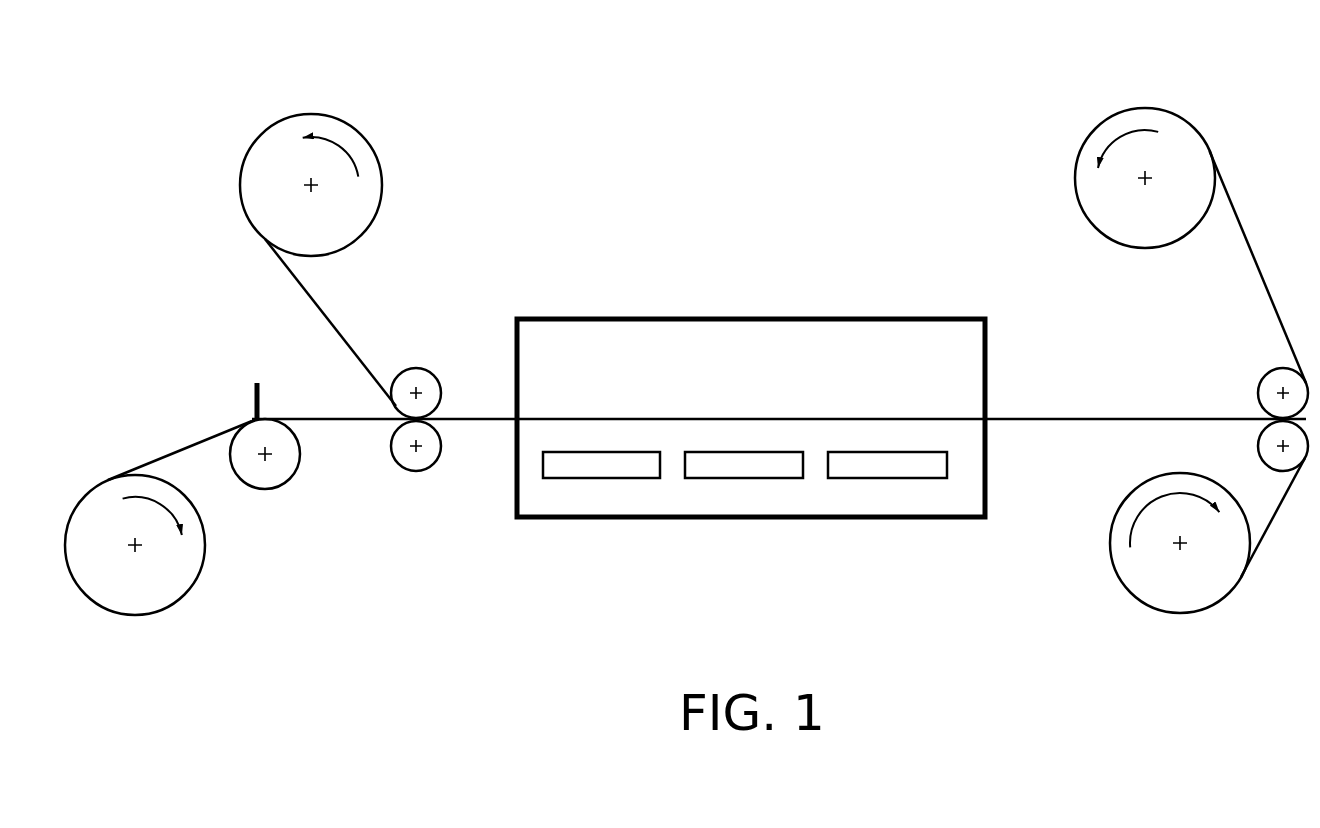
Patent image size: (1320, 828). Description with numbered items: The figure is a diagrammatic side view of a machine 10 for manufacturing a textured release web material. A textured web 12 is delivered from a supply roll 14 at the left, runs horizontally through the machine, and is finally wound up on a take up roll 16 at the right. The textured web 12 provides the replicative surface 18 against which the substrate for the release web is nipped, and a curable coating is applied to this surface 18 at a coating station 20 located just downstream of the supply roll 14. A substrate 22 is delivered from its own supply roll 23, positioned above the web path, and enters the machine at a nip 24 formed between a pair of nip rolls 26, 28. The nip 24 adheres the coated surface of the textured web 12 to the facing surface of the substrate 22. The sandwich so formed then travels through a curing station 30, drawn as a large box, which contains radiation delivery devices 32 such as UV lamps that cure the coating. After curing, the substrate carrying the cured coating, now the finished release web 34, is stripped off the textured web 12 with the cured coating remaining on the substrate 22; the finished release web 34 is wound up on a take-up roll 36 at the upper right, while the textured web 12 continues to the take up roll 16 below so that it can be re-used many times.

The machine 10 is at (722, 127).
The textured web 12 is at (181, 432).
The supply roll 14 is at (146, 636).
The take up roll 16 is at (1159, 625).
The replicative surface 18 is at (352, 418).
The coating station 20 is at (232, 412).
The substrate 22 is at (345, 338).
The supply roll 23 is at (289, 94).
The nip 24 is at (406, 447).
The nip roll 26 is at (429, 382).
The nip roll 28 is at (396, 445).
The curing station 30 is at (730, 291).
The radiation delivery devices 32 is at (649, 489).
The finished release web 34 is at (1254, 253).
The take-up roll 36 is at (1087, 119).